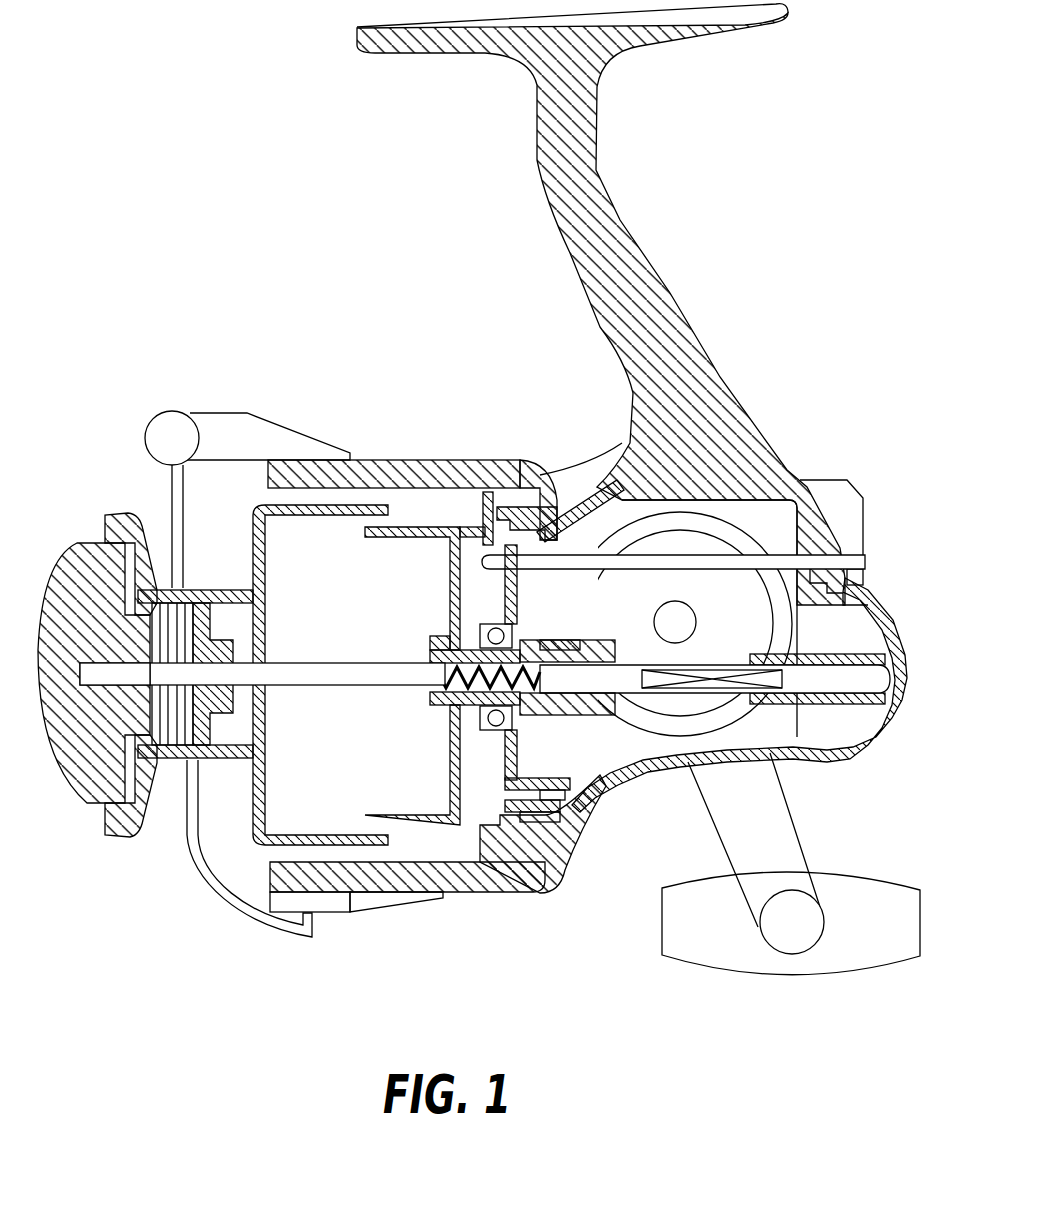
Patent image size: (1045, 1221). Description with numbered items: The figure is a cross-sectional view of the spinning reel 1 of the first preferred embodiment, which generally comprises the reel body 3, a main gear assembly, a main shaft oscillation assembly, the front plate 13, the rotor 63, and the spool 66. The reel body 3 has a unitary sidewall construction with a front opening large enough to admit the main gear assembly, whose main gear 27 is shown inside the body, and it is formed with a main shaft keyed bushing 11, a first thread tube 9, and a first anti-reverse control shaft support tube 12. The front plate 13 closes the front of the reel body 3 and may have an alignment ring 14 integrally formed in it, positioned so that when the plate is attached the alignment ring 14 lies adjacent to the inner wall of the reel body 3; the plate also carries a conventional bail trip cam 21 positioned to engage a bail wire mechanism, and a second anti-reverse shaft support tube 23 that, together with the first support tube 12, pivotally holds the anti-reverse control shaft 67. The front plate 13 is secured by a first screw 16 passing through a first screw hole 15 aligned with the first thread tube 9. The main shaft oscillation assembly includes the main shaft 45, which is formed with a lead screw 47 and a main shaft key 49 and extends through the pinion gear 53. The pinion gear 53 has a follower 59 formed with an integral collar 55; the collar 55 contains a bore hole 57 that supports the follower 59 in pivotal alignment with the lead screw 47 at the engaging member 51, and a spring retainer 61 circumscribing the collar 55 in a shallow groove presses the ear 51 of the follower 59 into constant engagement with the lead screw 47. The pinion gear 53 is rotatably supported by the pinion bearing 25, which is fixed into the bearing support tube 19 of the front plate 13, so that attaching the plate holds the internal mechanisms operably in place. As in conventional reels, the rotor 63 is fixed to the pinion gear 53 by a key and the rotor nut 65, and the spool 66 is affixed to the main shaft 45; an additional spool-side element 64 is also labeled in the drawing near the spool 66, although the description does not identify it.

The spinning reel 1 is at (258, 68).
The reel body 3 is at (687, 268).
The first thread tube 9 is at (555, 880).
The main shaft keyed bushing 11 is at (865, 720).
The first anti-reverse control shaft support tube 12 is at (833, 607).
The front plate 13 is at (455, 780).
The alignment ring 14 is at (600, 490).
The first screw hole 15 is at (497, 850).
The first screw 16 is at (515, 850).
The bearing support tube 19 is at (445, 632).
The bail trip cam 21 is at (497, 507).
The second anti-reverse shaft support tube 23 is at (483, 527).
The pinion bearing 25 is at (440, 700).
The main gear 27 is at (707, 523).
The main shaft 45 is at (345, 684).
The lead screw 47 is at (440, 673).
The main shaft key 49 is at (780, 704).
The engaging member 51 is at (540, 655).
The pinion gear 53 is at (640, 715).
The collar 55 is at (585, 790).
The bore hole 57 is at (603, 557).
The follower 59 is at (515, 500).
The spring retainer 61 is at (585, 812).
The rotor 63 is at (292, 465).
The drag washer stack 64 is at (413, 600).
The rotor nut 65 is at (440, 648).
The spool 66 is at (252, 562).
The anti-reverse control shaft 67 is at (820, 566).